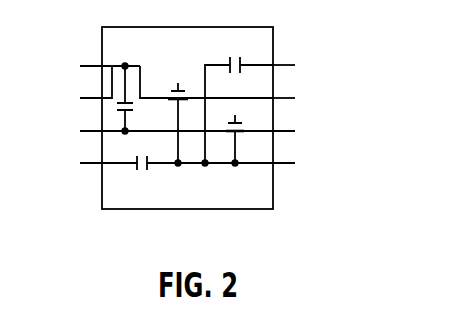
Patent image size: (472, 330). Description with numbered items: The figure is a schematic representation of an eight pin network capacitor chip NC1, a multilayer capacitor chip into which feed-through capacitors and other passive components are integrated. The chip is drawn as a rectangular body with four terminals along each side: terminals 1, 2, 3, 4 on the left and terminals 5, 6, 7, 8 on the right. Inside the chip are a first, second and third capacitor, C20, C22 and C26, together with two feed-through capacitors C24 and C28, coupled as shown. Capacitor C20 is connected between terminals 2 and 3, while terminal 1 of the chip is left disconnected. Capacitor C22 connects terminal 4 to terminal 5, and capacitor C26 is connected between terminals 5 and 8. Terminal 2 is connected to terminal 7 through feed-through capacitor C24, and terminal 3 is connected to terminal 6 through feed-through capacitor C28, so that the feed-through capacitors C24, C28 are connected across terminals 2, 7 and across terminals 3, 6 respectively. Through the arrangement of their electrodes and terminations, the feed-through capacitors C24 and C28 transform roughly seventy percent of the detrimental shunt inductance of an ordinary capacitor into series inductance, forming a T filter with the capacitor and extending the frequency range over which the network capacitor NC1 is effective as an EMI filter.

The network capacitor chip NC1 is at (277, 52).
The terminal 1 is at (102, 67).
The terminal 2 is at (168, 89).
The terminal 3 is at (179, 132).
The terminal 4 is at (179, 164).
The terminal 5 is at (292, 67).
The terminal 6 is at (292, 99).
The terminal 7 is at (292, 132).
The terminal 8 is at (292, 164).
The first capacitor C20 is at (145, 98).
The second capacitor C22 is at (140, 179).
The feed-through capacitor C24 is at (172, 91).
The third capacitor C26 is at (237, 98).
The feed-through capacitor C28 is at (243, 129).